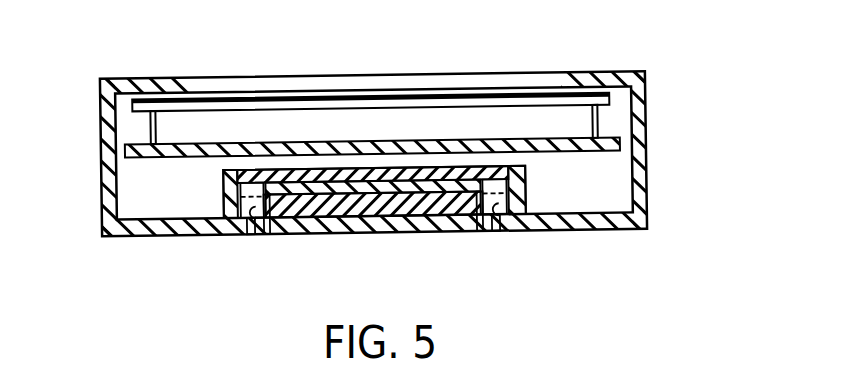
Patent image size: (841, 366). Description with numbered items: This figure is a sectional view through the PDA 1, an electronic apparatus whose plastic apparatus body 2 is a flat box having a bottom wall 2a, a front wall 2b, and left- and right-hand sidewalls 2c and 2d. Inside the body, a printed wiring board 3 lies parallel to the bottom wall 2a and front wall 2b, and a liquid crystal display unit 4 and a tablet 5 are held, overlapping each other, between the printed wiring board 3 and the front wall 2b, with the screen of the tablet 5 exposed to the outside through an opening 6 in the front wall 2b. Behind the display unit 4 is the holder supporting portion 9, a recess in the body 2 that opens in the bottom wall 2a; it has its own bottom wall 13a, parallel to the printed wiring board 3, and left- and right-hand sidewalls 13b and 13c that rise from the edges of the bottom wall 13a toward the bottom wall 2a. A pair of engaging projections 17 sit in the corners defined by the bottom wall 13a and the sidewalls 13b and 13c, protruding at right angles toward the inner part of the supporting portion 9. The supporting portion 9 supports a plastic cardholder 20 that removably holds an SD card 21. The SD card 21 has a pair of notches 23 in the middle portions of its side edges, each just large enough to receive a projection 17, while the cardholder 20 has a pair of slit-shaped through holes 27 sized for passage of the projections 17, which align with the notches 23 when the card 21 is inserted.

The PDA 1 is at (666, 57).
The apparatus body 2 is at (101, 77).
The bottom wall 2a is at (578, 233).
The front wall 2b is at (604, 78).
The left-hand sidewall 2c is at (102, 183).
The right-hand sidewall 2d is at (648, 174).
The printed wiring board 3 is at (549, 145).
The liquid crystal display unit 4 is at (241, 118).
The tablet 5 is at (290, 104).
The opening 6 is at (193, 97).
The holder supporting portion 9 is at (355, 170).
The bottom wall 13a is at (426, 172).
The left-hand sidewall 13b is at (236, 198).
The right-hand sidewall 13c is at (526, 183).
The engaging projections 17 is at (250, 233).
The cardholder 20 is at (392, 205).
The SD card 21 is at (348, 190).
The notches 23 is at (270, 233).
The through holes 27 is at (495, 182).